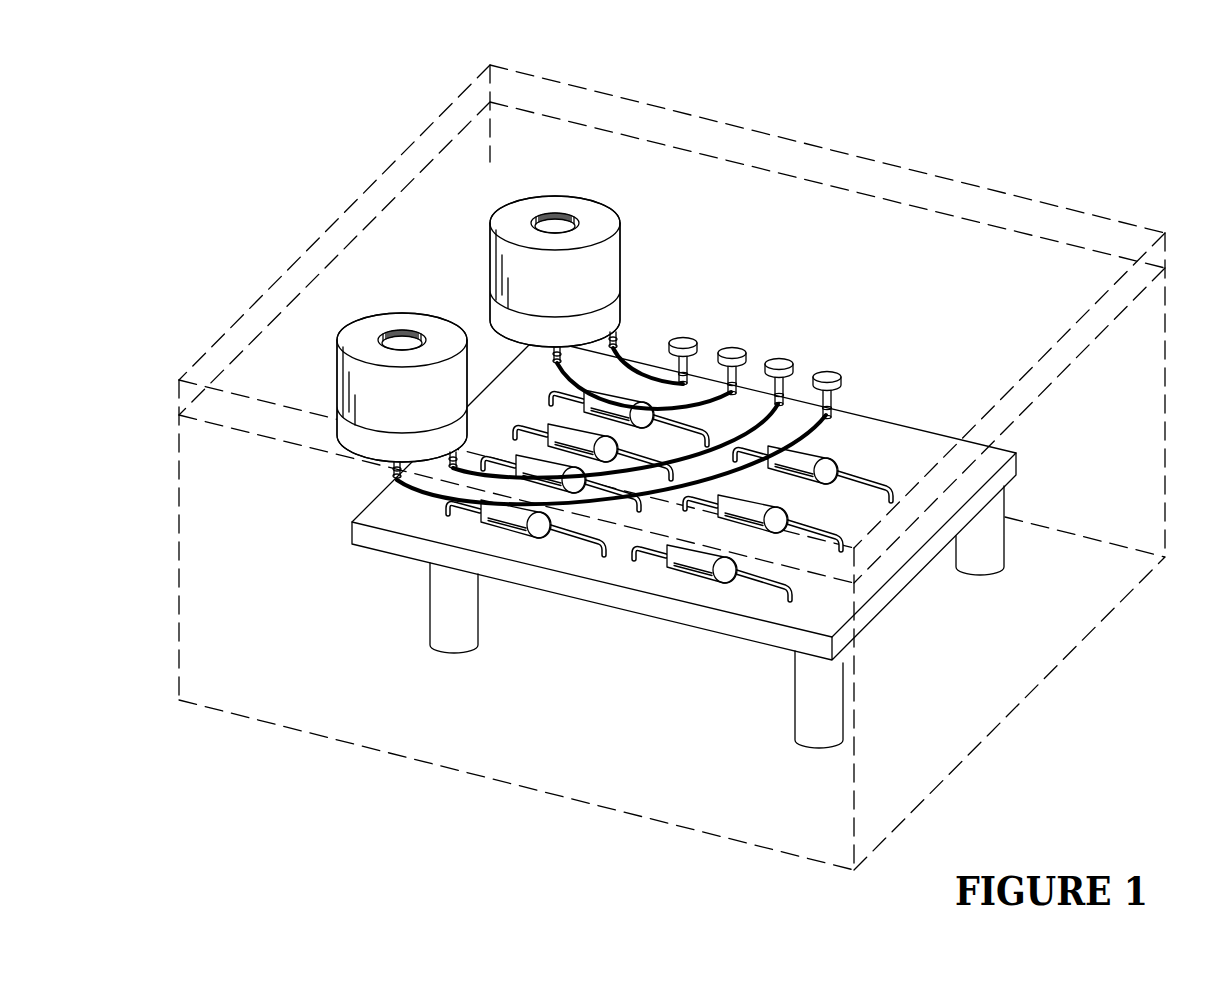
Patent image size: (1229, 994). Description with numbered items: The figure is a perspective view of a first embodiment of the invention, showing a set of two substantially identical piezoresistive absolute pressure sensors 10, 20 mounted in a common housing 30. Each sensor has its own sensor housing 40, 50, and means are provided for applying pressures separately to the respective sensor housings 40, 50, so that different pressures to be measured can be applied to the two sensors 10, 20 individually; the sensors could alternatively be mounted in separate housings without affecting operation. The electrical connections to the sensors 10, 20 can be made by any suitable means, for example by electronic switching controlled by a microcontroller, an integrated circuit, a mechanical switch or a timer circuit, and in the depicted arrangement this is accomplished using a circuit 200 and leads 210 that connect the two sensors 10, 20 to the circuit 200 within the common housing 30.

The piezoresistive absolute pressure sensor 10 is at (342, 455).
The piezoresistive absolute pressure sensor 20 is at (605, 190).
The common housing 30 is at (1170, 336).
The sensor housing 40 is at (383, 417).
The sensor housing 50 is at (600, 270).
The circuit 200 is at (899, 564).
The leads 210 is at (628, 508).